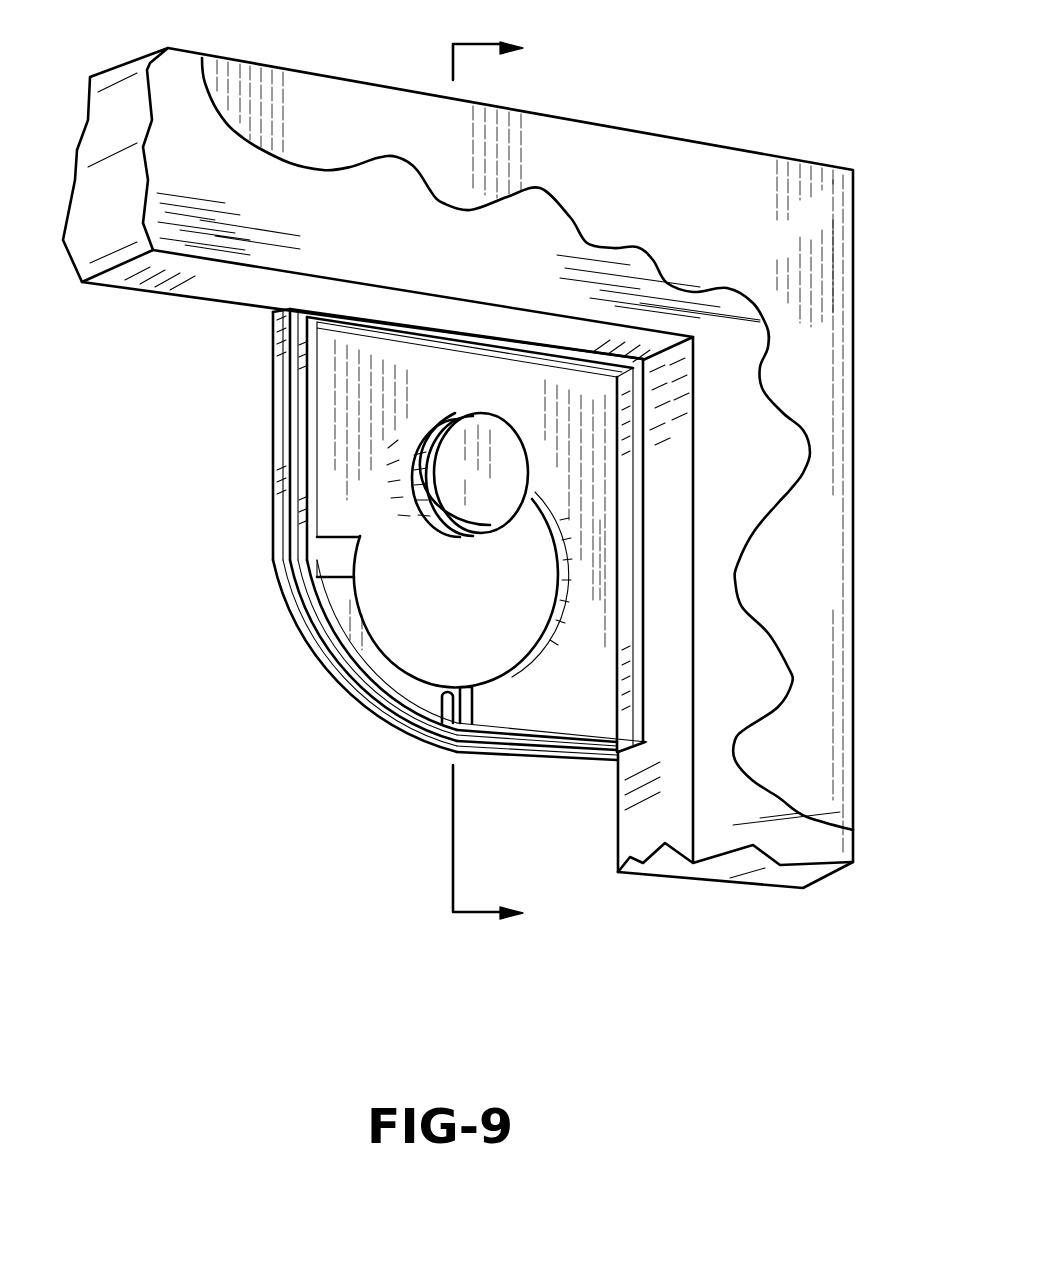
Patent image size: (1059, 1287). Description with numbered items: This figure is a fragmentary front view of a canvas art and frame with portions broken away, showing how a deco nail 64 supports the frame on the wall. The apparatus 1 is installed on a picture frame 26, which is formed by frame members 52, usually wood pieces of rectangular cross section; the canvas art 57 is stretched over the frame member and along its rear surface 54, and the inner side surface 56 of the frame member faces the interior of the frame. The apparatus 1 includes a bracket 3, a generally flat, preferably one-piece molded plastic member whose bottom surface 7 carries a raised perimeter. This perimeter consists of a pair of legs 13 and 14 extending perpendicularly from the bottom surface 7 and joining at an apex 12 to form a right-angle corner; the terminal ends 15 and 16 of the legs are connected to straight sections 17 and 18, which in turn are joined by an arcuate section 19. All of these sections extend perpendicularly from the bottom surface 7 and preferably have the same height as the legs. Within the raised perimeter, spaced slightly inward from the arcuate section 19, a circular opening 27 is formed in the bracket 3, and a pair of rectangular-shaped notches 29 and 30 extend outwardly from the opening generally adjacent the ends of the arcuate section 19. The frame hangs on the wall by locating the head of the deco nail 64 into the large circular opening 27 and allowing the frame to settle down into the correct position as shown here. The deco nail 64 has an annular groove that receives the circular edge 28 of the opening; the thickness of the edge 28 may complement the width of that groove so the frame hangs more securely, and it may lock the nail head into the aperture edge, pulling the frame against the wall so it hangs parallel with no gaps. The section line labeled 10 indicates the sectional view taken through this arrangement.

The apparatus 1 is at (200, 622).
The bracket 3 is at (255, 347).
The bottom surface 7 is at (553, 688).
The section line 10- 10 is at (503, 487).
The apex 12 is at (645, 362).
The leg 13 is at (637, 447).
The leg 14 is at (542, 350).
The terminal end 15 is at (645, 742).
The terminal end 16 is at (306, 335).
The straight section 17 is at (507, 732).
The straight section 18 is at (300, 388).
The arcuate section 19 is at (330, 662).
The picture frame 26 is at (650, 120).
The circular opening 27 is at (352, 598).
The circular edge 28 is at (553, 600).
The rectangular-shaped notch 29 is at (449, 724).
The rectangular-shaped notch 30 is at (322, 560).
The frame member 52 is at (788, 850).
The rear surface 54 is at (720, 837).
The inner side surface 56 is at (633, 803).
The canvas art 57 is at (325, 92).
The deco nail 64 is at (497, 428).